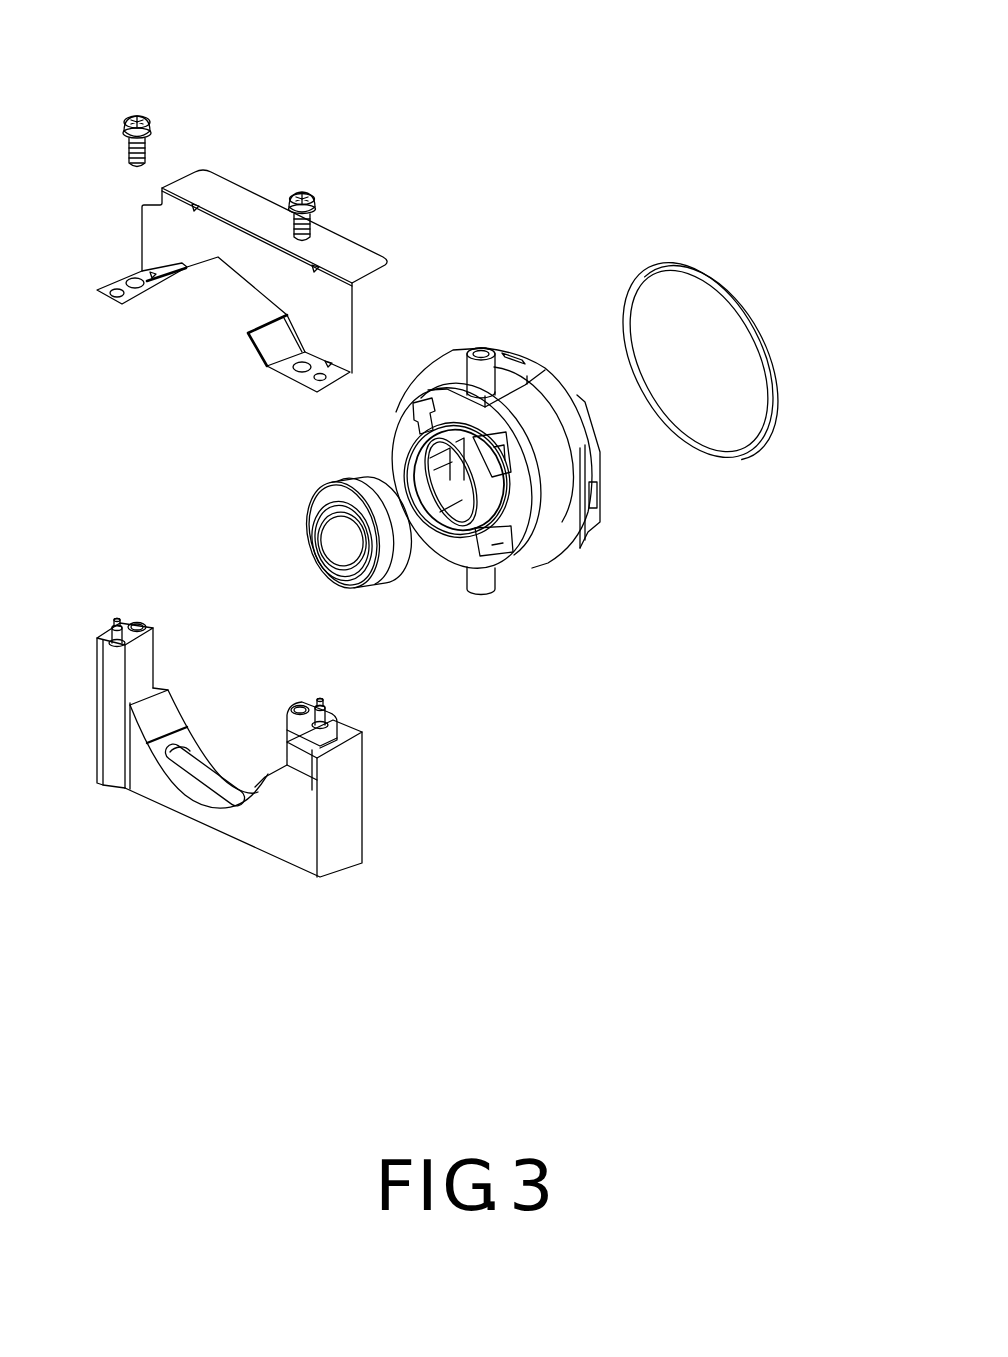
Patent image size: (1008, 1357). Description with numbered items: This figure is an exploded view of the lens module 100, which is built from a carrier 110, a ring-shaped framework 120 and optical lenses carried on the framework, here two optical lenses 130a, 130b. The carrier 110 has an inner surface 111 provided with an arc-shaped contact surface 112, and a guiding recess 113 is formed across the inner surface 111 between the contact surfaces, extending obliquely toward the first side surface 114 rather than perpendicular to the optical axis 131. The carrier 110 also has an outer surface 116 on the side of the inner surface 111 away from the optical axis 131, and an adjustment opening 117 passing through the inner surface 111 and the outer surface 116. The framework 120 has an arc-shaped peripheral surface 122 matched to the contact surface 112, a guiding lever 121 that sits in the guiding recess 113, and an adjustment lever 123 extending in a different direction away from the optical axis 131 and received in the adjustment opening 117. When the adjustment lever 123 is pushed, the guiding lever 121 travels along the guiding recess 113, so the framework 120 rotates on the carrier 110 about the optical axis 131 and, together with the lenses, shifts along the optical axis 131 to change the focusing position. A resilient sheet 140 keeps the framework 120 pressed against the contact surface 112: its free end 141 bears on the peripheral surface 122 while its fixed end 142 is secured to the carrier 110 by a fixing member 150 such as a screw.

The lens module 100 is at (131, 29).
The carrier 110 is at (229, 762).
The inner surface 111 is at (147, 718).
The contact surface 112 is at (153, 752).
The guiding recess 113 is at (180, 765).
The first side surface 114 is at (272, 837).
The outer surface 116 is at (360, 905).
The adjustment opening 117 is at (147, 655).
The framework 120 is at (600, 530).
The guiding lever 121 is at (486, 578).
The peripheral surface 122 is at (537, 527).
The adjustment lever 123 is at (488, 370).
The optical lens 130a is at (387, 560).
The optical lens 130b is at (740, 306).
The optical axis 131 is at (625, 407).
The resilient sheet 140 is at (355, 120).
The free end 141 is at (272, 338).
The fixed end 142 is at (318, 362).
The fixing member 150 is at (128, 156).